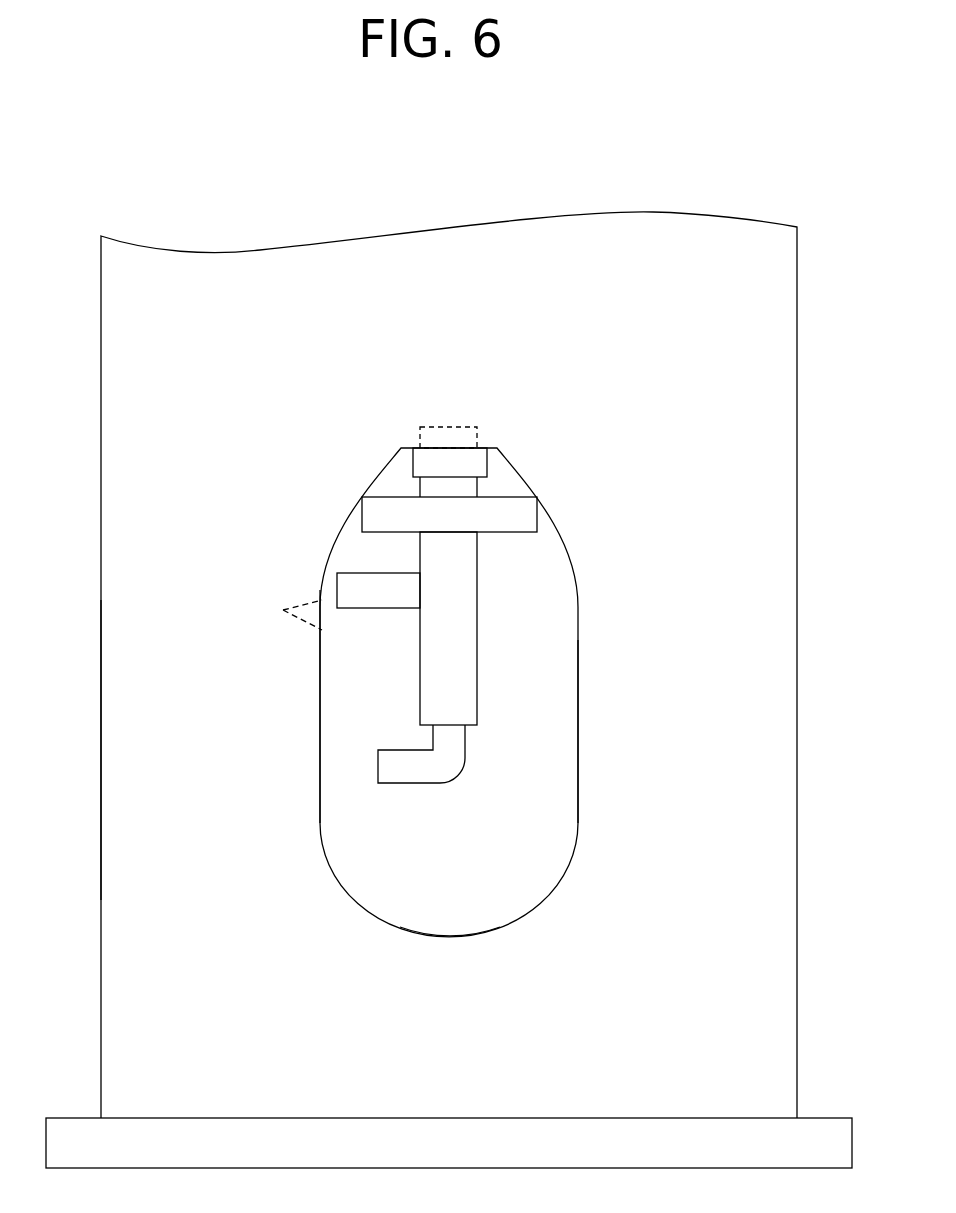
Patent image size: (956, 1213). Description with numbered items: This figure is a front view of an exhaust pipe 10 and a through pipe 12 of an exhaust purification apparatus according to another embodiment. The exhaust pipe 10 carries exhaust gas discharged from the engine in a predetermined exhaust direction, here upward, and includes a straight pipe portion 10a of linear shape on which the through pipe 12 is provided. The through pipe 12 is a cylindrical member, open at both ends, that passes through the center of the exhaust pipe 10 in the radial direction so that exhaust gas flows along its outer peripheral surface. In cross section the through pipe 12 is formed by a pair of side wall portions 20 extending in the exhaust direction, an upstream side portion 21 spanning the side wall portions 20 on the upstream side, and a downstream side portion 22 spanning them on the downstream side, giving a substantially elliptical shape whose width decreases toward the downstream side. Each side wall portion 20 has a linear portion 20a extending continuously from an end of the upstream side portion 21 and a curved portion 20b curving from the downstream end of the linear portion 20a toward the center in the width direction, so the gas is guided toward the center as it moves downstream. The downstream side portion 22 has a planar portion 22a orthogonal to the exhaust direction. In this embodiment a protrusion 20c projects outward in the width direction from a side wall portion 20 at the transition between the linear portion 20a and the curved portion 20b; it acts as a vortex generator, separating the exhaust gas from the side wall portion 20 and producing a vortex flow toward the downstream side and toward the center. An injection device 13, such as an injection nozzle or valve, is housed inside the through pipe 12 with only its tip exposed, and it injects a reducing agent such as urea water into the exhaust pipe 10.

The exhaust pipe 10 is at (43, 713).
The straight pipe portion 10a is at (100, 726).
The through pipe 12 is at (442, 683).
The injection device 13 is at (478, 637).
The side wall portion 20 is at (289, 498).
The linear portion 20a is at (319, 693).
The curved portion 20b is at (360, 500).
The protrusion 20c is at (283, 610).
The upstream side portion 21 is at (447, 940).
The downstream side portion 22 is at (409, 446).
The planar portion 22a is at (488, 446).